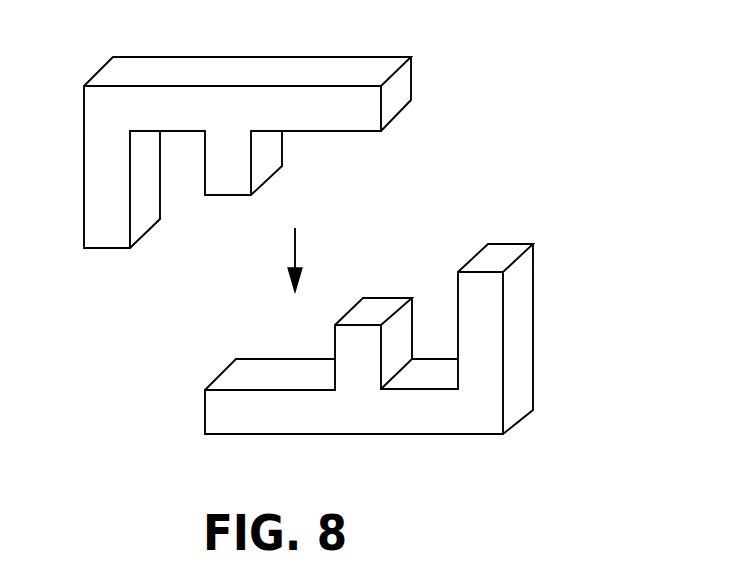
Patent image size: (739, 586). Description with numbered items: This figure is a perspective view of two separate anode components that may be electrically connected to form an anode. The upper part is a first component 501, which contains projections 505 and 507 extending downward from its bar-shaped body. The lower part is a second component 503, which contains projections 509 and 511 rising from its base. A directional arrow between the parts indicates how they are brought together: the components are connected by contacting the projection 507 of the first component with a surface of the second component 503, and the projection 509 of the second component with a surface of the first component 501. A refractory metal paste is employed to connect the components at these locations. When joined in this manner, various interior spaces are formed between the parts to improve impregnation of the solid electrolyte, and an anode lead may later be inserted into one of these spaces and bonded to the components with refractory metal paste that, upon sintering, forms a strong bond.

The first component 501 is at (337, 63).
The second component 503 is at (478, 420).
The projection 505 is at (102, 238).
The projection 507 is at (242, 160).
The projection 509 is at (383, 303).
The projection 511 is at (488, 289).